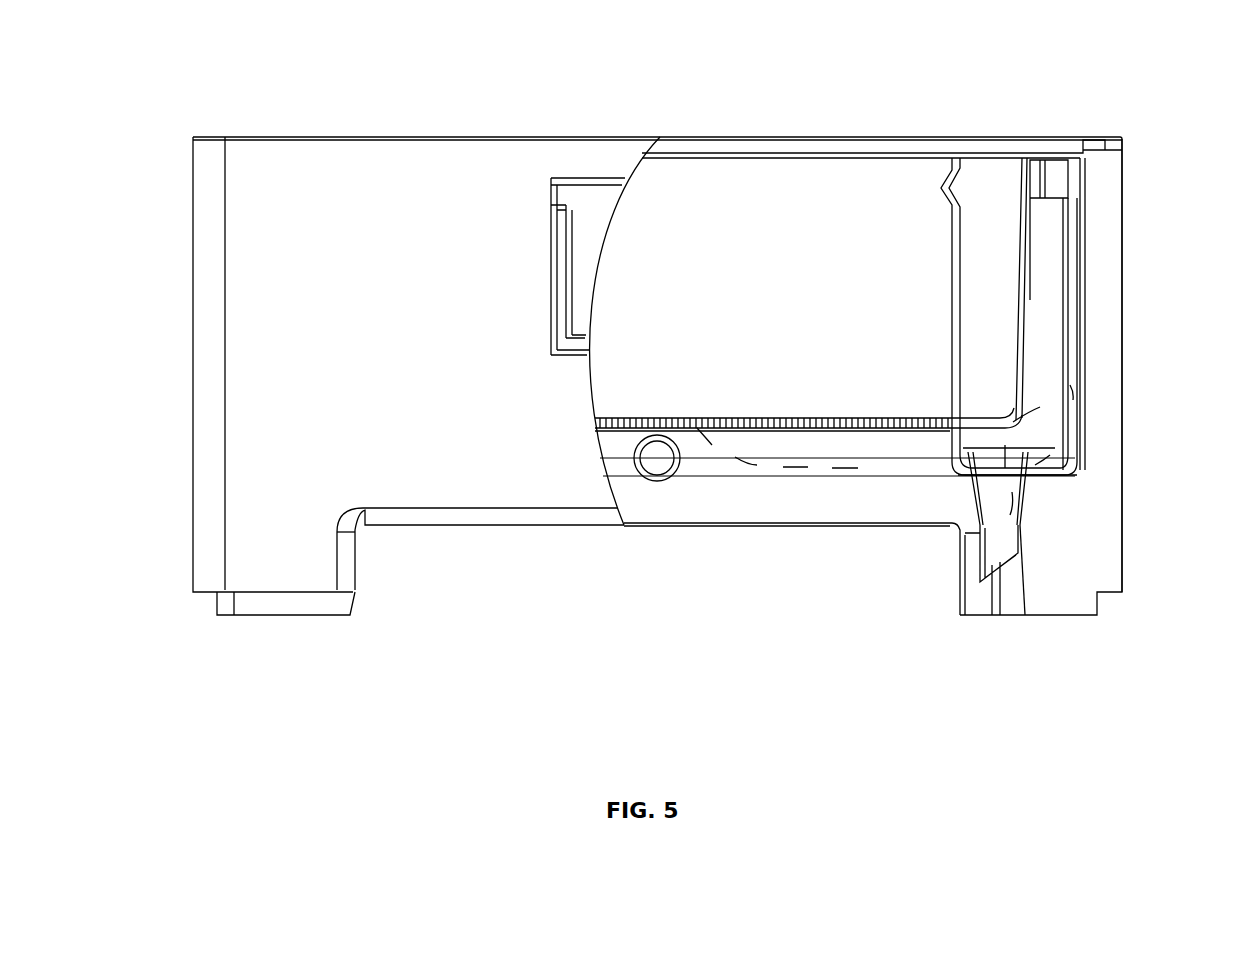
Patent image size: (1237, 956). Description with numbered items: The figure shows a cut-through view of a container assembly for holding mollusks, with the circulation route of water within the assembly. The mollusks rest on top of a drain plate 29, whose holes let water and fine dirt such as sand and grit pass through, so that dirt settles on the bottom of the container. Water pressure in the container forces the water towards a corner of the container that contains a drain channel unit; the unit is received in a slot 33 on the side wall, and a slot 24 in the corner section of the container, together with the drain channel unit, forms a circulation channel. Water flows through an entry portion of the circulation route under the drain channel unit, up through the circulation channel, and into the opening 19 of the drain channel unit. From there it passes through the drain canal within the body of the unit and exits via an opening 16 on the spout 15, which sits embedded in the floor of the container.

The spout 15 is at (1025, 513).
The opening 16 is at (978, 557).
The opening 19 is at (1062, 183).
The slot 24 is at (1080, 170).
The drain plate 29 is at (806, 418).
The slot 33 is at (1019, 150).